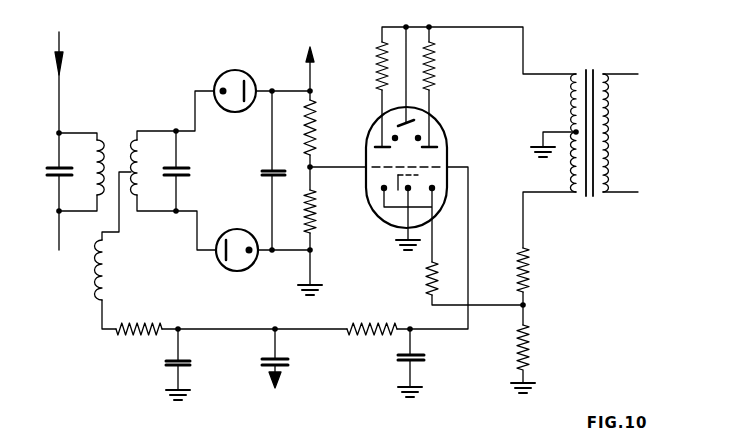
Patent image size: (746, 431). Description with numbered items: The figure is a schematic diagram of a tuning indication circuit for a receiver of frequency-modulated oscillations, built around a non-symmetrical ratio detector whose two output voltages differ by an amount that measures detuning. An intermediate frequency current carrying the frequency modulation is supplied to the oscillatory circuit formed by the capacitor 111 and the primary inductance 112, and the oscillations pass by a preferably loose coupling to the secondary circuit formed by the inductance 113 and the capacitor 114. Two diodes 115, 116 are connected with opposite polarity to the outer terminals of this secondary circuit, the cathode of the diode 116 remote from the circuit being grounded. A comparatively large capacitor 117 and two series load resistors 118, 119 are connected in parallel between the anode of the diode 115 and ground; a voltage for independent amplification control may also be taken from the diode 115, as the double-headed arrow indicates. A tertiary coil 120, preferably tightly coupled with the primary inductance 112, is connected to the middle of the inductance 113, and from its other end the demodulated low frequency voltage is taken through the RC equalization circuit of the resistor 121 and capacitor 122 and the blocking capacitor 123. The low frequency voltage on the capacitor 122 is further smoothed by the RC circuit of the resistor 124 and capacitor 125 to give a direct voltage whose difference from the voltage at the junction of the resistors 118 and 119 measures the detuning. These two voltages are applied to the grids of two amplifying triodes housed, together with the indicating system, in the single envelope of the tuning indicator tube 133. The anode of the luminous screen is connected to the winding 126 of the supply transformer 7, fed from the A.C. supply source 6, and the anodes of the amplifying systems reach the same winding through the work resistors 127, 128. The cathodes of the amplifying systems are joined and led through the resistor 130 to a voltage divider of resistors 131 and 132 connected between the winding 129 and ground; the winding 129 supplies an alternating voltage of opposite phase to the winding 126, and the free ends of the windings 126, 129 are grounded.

The oscillatory circuit capacitor 111 is at (51, 172).
The primary inductance 112 is at (86, 174).
The oscillatory circuit inductance 113 is at (148, 174).
The secondary circuit capacitor 114 is at (184, 171).
The diode 115 is at (248, 90).
The diode 116 is at (250, 252).
The capacitor 117 is at (263, 170).
The load resistor 118 is at (325, 127).
The load resistor 119 is at (325, 211).
The tertiary coil 120 is at (85, 274).
The equalization resistor 121 is at (139, 320).
The equalization capacitor 122 is at (188, 359).
The blocking capacitor 123 is at (284, 358).
The smoothing resistor 124 is at (372, 319).
The smoothing capacitor 125 is at (419, 358).
The winding 126 is at (554, 103).
The work resistor 127 is at (365, 66).
The work resistor 128 is at (445, 66).
The winding 129 is at (554, 162).
The resistor 130 is at (417, 278).
The voltage divider resistor 131 is at (538, 270).
The voltage divider resistor 132 is at (540, 354).
The tuning indicator tube 133 is at (419, 184).
The transformer 7 is at (589, 126).
The A.C. supply source 6 is at (617, 133).